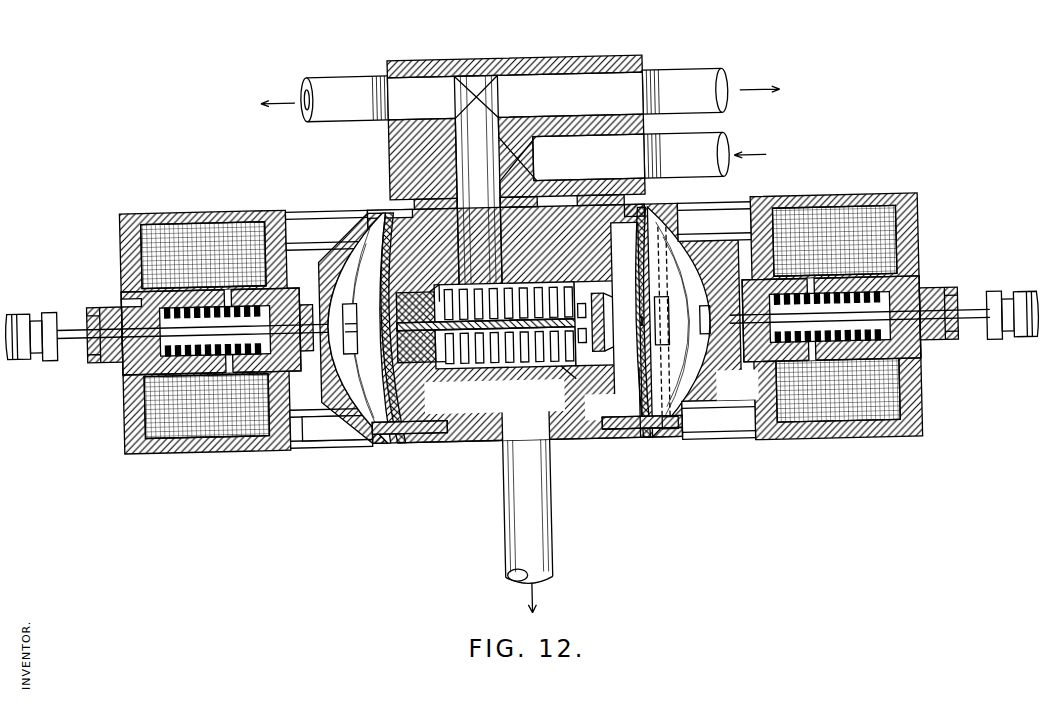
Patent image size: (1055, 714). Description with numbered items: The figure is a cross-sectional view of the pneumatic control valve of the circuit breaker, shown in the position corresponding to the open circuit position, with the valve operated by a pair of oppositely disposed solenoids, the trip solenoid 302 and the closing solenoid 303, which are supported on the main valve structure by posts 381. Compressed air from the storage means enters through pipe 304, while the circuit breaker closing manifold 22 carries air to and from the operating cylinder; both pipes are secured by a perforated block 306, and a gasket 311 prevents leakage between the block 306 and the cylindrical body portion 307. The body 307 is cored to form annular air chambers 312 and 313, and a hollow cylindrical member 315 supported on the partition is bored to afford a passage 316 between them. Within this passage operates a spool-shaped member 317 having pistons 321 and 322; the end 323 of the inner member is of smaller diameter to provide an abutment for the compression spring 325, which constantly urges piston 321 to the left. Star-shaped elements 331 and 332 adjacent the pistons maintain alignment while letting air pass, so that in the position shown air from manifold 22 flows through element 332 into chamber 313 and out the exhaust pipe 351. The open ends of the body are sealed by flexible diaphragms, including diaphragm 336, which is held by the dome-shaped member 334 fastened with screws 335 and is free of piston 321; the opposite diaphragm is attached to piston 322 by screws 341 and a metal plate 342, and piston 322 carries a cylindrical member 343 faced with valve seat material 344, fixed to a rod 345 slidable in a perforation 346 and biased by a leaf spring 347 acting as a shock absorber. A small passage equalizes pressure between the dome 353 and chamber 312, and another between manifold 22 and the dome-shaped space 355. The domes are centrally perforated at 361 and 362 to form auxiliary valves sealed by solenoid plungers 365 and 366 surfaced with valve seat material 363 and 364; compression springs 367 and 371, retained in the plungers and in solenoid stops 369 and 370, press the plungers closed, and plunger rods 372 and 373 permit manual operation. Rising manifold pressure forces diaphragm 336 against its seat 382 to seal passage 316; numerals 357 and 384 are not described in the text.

The manifold 22 is at (348, 74).
The trip solenoid 302 is at (214, 446).
The closing solenoid 303 is at (800, 206).
The pipe 304 is at (726, 141).
The block 306 is at (616, 60).
The cylindrical body portion 307 is at (452, 441).
The gasket 311 is at (632, 208).
The annular air chamber 312 is at (623, 436).
The annular air chamber 313 is at (422, 442).
The hollow cylindrical member 315 is at (494, 442).
The passage 316 is at (495, 368).
The spool-shaped member 317 is at (425, 428).
The piston 321 is at (452, 372).
The piston 322 is at (530, 425).
The end of inner cylindrical member 323 is at (596, 432).
The compression spring 325 is at (540, 362).
The star-shaped element 331 is at (598, 290).
The star-shaped element 332 is at (600, 218).
The dome shaped circular member 334 is at (518, 317).
The screws 335 is at (392, 433).
The flexible diaphragm valve 336 is at (388, 372).
The screws 341 is at (612, 380).
The metal plate 342 is at (650, 292).
The cylindrical member 343 is at (670, 434).
The valve seat material 344 is at (719, 420).
The rod 345 is at (588, 292).
The perforation 346 is at (585, 368).
The leaf spring 347 is at (672, 300).
The exhaust pipe 351 is at (500, 496).
The dome 353 is at (692, 420).
The dome shaped space 355 is at (368, 416).
The bolt 357 is at (640, 441).
The central perforation 361 is at (322, 280).
The central perforation 362 is at (705, 380).
The valve seat material 363 is at (306, 300).
The valve seat material 364 is at (712, 340).
The solenoid plunger 365 is at (345, 352).
The solenoid plunger 366 is at (672, 305).
The compression spring 367 is at (126, 293).
The solenoid stop 369 is at (120, 349).
The solenoid stop 370 is at (925, 352).
The compression spring 371 is at (905, 310).
The plunger rod 372 is at (70, 318).
The plunger rod 373 is at (970, 318).
The posts 381 is at (332, 443).
The seat 382 is at (400, 207).
The gasket 384 is at (378, 211).